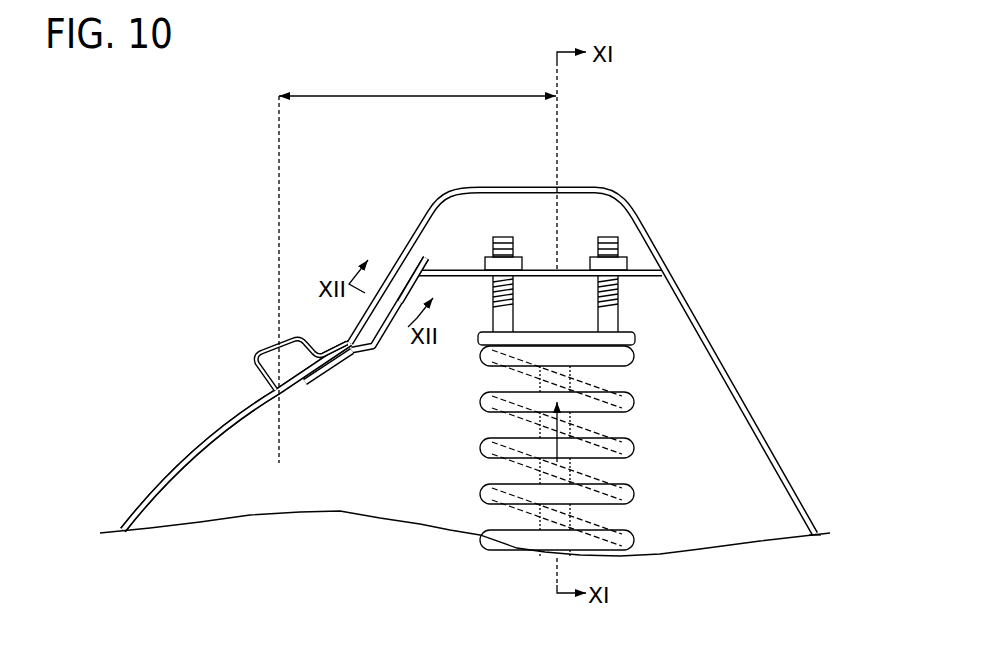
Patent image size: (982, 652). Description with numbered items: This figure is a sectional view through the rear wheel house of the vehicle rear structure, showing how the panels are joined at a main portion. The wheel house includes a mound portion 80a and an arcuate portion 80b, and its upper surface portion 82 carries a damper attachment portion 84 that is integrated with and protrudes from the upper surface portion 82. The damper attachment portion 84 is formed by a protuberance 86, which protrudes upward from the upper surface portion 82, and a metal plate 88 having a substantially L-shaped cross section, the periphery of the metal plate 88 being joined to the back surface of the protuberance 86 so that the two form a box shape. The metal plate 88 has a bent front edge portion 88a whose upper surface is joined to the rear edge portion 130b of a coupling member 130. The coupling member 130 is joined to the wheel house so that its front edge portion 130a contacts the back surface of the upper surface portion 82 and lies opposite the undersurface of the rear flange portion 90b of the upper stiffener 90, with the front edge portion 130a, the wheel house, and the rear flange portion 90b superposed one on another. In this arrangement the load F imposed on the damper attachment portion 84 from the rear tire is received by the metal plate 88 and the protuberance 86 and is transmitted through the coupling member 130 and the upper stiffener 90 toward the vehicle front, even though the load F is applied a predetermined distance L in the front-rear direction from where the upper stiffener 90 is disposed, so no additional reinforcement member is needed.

The mound portion 80a is at (642, 226).
The arcuate portion 80b is at (197, 452).
The upper surface portion 82 is at (228, 420).
The damper attachment portion 84 is at (462, 148).
The protuberance 86 is at (428, 197).
The metal plate 88 is at (507, 265).
The front edge portion 88a is at (390, 303).
The upper stiffener 90 is at (292, 343).
The rear flange portion 90b is at (337, 342).
The coupling member 130 is at (365, 312).
The front edge portion 130a is at (341, 364).
The rear edge portion 130b is at (404, 261).
The load F is at (572, 420).
The predetermined distance L is at (420, 93).